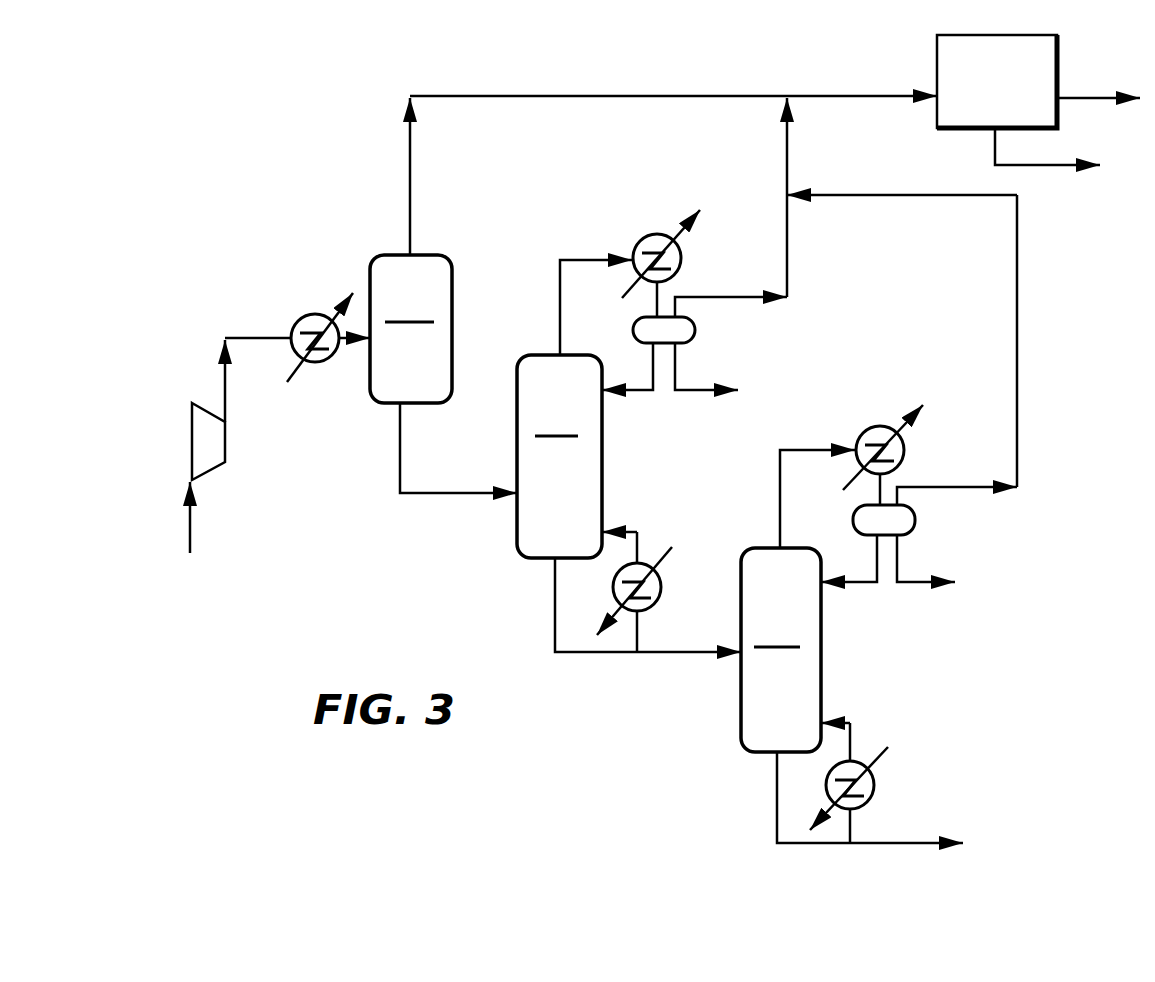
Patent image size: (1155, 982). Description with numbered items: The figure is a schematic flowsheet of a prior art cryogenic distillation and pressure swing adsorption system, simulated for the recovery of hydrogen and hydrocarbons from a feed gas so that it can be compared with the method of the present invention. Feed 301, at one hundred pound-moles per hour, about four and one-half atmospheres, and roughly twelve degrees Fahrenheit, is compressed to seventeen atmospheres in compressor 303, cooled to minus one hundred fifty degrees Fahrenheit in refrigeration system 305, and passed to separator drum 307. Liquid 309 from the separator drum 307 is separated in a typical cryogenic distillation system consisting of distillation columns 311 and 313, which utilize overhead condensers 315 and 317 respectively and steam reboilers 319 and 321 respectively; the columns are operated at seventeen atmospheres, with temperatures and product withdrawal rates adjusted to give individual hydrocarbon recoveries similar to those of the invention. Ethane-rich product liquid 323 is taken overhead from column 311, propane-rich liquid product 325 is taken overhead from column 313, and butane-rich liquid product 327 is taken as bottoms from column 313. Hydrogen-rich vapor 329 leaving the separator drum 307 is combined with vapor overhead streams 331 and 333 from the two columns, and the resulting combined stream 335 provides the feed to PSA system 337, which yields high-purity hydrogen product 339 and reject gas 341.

The feed 301 is at (190, 529).
The compressor 303 is at (192, 441).
The refrigeration system 305 is at (310, 313).
The separator drum 307 is at (411, 329).
The liquid 309 is at (452, 495).
The distillation column 311 is at (629, 456).
The distillation column 313 is at (798, 601).
The overhead condenser 315 is at (648, 234).
The overhead condenser 317 is at (905, 446).
The steam reboiler 319 is at (660, 575).
The steam reboiler 321 is at (878, 776).
The ethane-rich product liquid 323 is at (685, 393).
The propane-rich liquid product 325 is at (910, 585).
The butane-rich liquid product 327 is at (886, 846).
The hydrogen-rich vapor 329 is at (412, 186).
The vapor overhead stream 331 is at (787, 244).
The vapor overhead stream 333 is at (1016, 246).
The combined stream 335 is at (868, 94).
The PSA system 337 is at (936, 130).
The high-purity hydrogen product 339 is at (1077, 100).
The reject gas 341 is at (1048, 167).